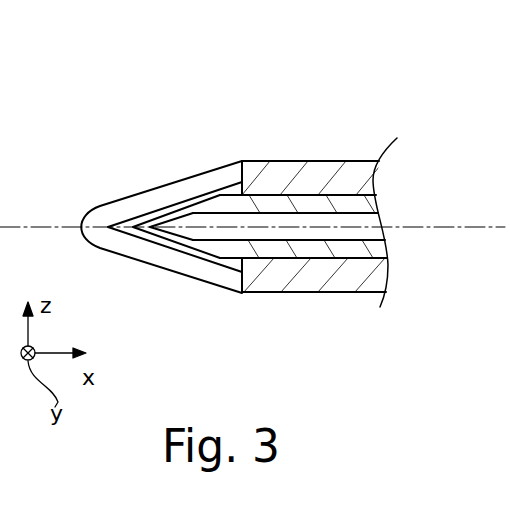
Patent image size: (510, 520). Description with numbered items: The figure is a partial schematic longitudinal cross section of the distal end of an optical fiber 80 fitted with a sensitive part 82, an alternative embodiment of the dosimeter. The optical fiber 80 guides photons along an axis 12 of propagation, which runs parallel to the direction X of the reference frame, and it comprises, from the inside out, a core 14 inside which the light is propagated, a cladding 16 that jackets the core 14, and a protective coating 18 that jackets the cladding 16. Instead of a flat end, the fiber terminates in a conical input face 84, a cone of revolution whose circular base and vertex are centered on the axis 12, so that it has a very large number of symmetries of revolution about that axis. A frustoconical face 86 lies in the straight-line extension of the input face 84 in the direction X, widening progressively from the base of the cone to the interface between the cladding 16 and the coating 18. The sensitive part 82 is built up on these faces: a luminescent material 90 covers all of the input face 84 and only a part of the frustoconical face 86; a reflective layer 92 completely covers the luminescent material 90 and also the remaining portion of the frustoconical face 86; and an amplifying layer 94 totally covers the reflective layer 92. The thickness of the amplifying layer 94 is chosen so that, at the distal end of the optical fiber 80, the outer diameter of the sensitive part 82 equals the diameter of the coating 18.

The axis of propagation 12 is at (406, 227).
The core 14 is at (278, 222).
The cladding 16 is at (320, 207).
The protective coating 18 is at (372, 186).
The optical fiber 80 is at (412, 90).
The sensitive part 82 is at (237, 90).
The conical input face 84 is at (223, 197).
The frustoconical face 86 is at (250, 202).
The luminescent material 90 is at (204, 216).
The reflective layer 92 is at (150, 210).
The amplifying layer 94 is at (98, 212).